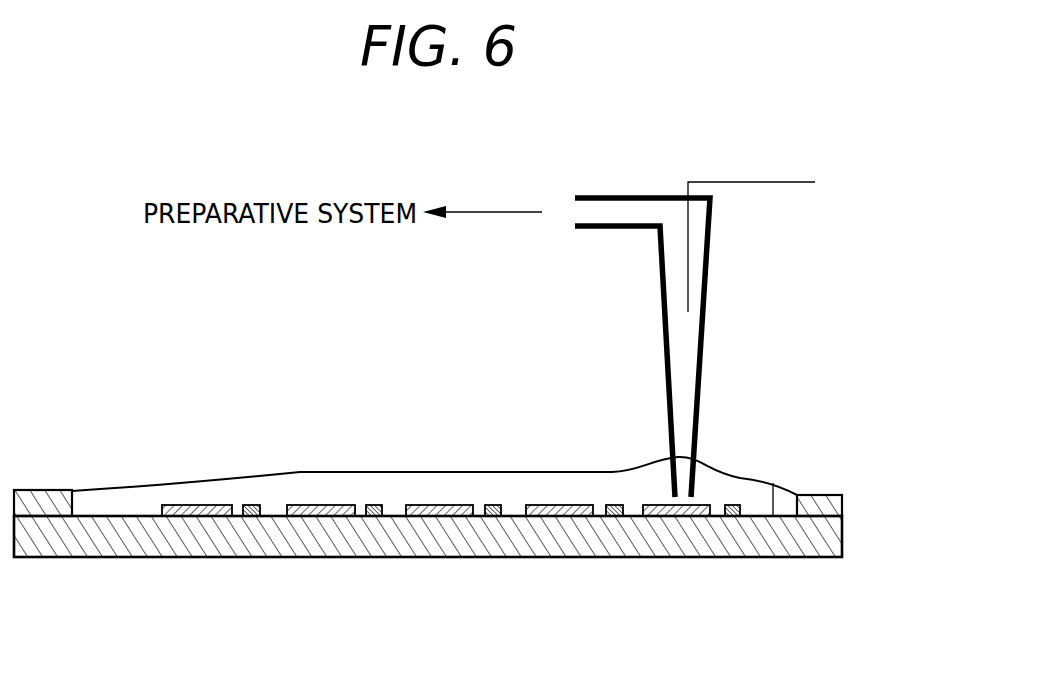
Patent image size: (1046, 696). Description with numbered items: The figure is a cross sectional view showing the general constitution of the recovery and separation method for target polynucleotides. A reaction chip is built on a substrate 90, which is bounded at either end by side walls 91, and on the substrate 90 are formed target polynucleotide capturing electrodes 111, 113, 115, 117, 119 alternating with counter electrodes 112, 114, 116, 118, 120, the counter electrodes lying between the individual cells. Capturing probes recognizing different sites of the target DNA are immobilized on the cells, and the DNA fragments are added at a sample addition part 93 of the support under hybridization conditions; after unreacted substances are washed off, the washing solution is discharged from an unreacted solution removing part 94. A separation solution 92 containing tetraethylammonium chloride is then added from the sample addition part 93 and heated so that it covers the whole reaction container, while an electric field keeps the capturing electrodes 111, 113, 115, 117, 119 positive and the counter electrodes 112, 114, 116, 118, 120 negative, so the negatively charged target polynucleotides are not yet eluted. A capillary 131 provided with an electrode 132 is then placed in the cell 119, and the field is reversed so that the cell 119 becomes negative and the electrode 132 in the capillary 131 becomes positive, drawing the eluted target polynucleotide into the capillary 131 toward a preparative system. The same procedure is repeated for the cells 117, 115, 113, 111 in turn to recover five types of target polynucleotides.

The substrate 90 is at (385, 558).
The side walls 91 is at (32, 490).
The separation solution 92 is at (332, 493).
The sample addition part 93 is at (108, 516).
The unreacted solution removing part 94 is at (773, 483).
The target polynucleotide capturing electrode 111 is at (181, 505).
The counter electrode 112 is at (250, 505).
The target polynucleotide capturing electrode 113 is at (312, 505).
The counter electrode 114 is at (376, 505).
The target polynucleotide capturing electrode 115 is at (433, 505).
The counter electrode 116 is at (497, 505).
The target polynucleotide capturing electrode 117 is at (552, 505).
The counter electrode 118 is at (613, 505).
The target polynucleotide capturing electrode 119 is at (703, 505).
The counter electrode 120 is at (732, 505).
The capillary 131 is at (707, 282).
The electrode 132 is at (750, 181).